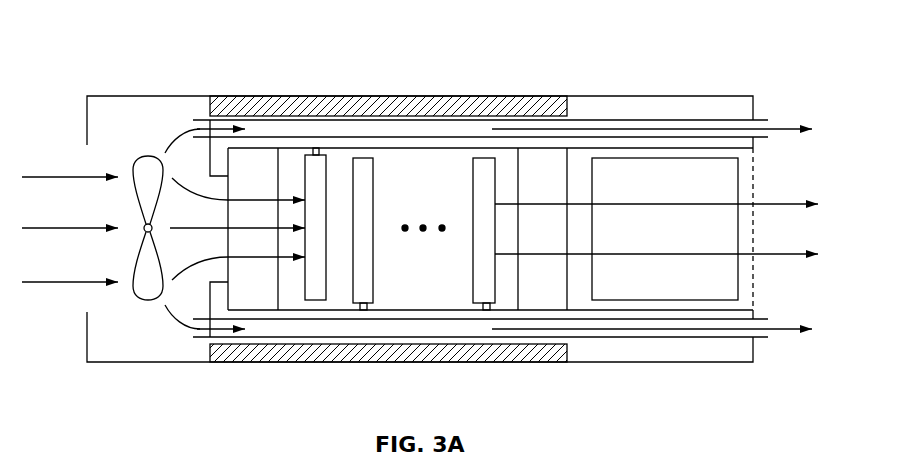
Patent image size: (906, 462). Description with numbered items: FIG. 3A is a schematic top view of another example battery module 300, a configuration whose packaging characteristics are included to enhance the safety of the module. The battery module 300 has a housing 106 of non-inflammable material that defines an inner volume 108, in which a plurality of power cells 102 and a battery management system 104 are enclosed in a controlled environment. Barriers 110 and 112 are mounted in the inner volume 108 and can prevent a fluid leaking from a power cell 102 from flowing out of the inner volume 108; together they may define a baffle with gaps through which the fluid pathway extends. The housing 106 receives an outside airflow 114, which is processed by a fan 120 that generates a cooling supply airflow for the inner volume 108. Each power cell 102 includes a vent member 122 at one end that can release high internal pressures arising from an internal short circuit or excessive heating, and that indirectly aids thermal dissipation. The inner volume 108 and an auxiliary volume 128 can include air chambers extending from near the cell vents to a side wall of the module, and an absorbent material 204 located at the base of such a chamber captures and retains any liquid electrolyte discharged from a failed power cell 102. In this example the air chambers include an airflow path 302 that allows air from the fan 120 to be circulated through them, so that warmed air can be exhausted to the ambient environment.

The battery module 300 is at (147, 42).
The power cell 102 is at (473, 246).
The battery management system 104 is at (721, 190).
The housing 106 is at (508, 96).
The inner volume 108 is at (441, 187).
The barrier 110 is at (272, 187).
The barrier 112 is at (560, 187).
The outside airflow 114 is at (86, 228).
The fan 120 is at (148, 157).
The vent member 122 is at (487, 311).
The auxiliary volume 128 is at (745, 183).
The absorbent material 204 is at (515, 347).
The airflow path 302 is at (645, 119).